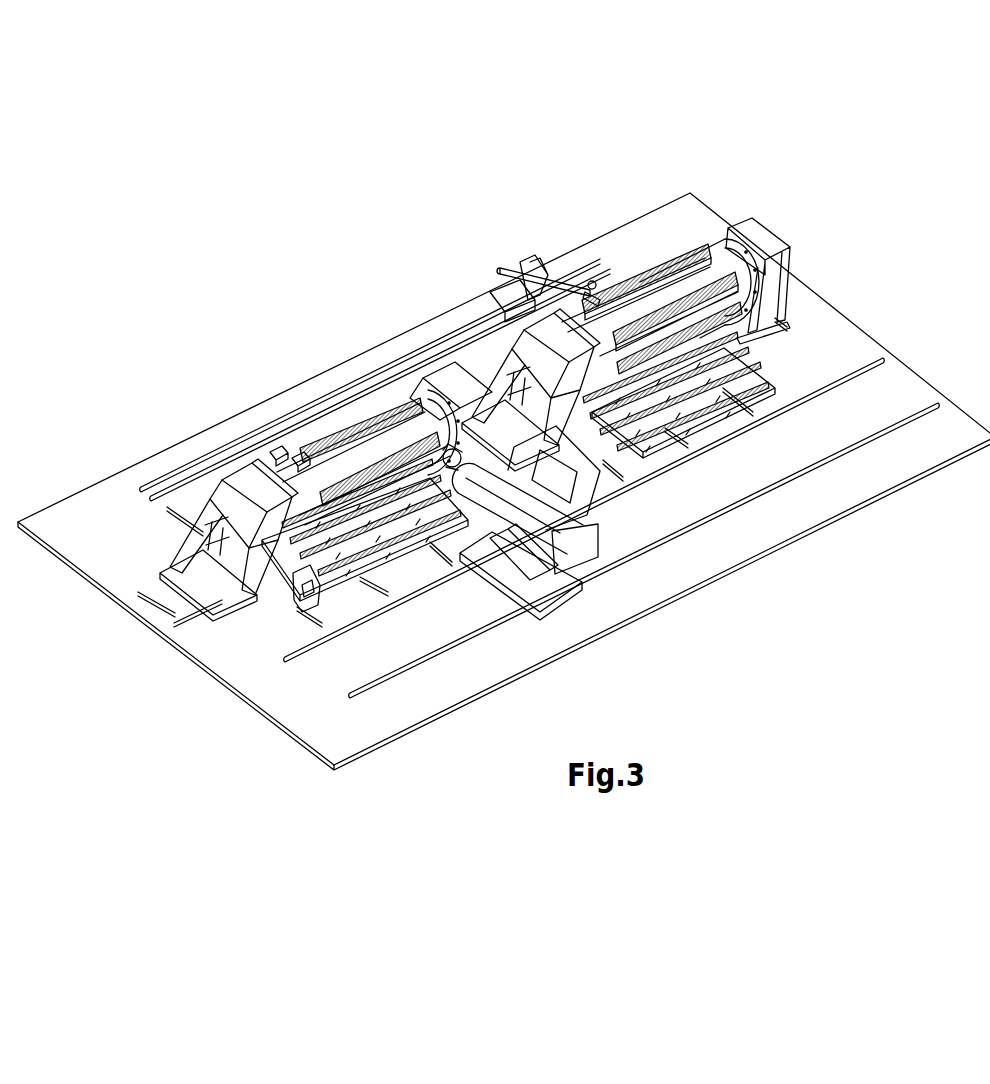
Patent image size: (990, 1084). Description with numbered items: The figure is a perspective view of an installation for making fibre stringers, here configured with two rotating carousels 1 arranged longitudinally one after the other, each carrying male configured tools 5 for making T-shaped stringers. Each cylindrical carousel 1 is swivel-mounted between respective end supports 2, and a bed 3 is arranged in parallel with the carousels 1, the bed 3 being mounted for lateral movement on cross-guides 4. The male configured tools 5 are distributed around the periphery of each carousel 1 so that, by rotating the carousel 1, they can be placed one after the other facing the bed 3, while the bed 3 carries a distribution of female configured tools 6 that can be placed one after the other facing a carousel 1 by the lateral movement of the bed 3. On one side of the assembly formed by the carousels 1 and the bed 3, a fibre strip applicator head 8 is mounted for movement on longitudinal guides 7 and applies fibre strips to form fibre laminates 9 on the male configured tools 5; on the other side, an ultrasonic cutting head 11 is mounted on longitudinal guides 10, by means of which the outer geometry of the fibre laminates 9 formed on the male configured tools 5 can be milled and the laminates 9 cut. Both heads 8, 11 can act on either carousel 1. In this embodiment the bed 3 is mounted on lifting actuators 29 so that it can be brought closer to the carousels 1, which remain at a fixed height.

The carousel 1 is at (667, 247).
The end supports 2 is at (255, 485).
The bed 3 is at (773, 367).
The cross-guides 4 is at (360, 600).
The male configured tools 5 is at (300, 462).
The female configured tools 6 is at (402, 535).
The longitudinal guides 7 is at (850, 448).
The fibre strip applicator head 8 is at (449, 460).
The fibre laminates 9 is at (710, 278).
The longitudinal guides 10 is at (395, 363).
The ultrasonic cutting head 11 is at (592, 277).
The lifting actuators 29 is at (307, 567).